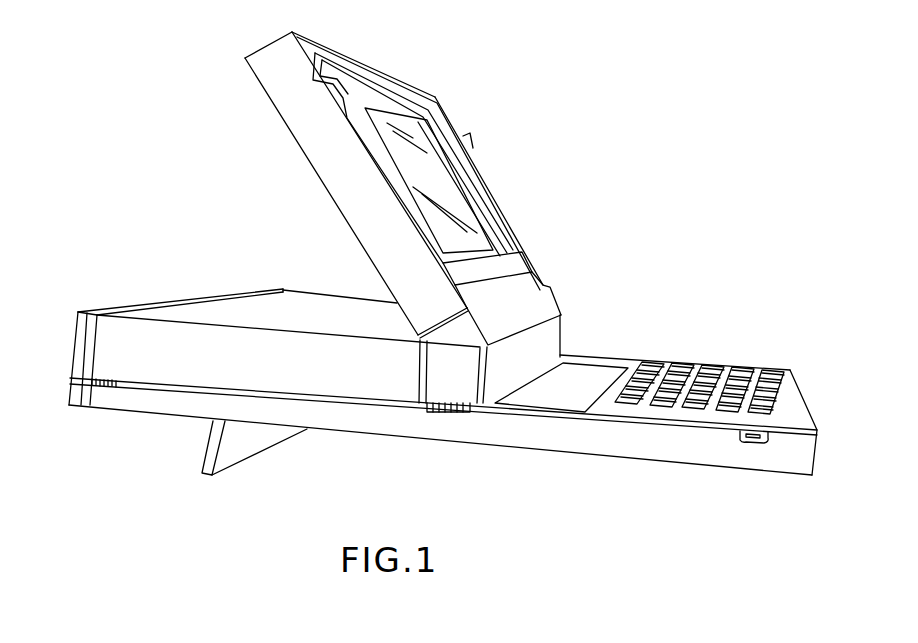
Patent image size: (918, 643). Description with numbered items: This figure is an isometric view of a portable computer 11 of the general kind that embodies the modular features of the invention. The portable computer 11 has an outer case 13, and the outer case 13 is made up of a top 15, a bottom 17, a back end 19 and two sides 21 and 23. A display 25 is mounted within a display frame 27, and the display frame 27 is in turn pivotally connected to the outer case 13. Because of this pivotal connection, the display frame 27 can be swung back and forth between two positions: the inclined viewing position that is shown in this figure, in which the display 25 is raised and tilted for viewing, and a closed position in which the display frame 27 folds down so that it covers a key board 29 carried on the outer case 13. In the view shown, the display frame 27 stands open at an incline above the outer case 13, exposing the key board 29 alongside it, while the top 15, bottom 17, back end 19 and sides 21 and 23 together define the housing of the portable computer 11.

The portable computer 11 is at (623, 72).
The outer case 13 is at (116, 361).
The top 15 is at (308, 307).
The bottom 17 is at (122, 413).
The back end 19 is at (118, 308).
The side 21 is at (246, 378).
The side 23 is at (363, 298).
The display 25 is at (435, 188).
The display frame 27 is at (263, 56).
The key board 29 is at (718, 362).